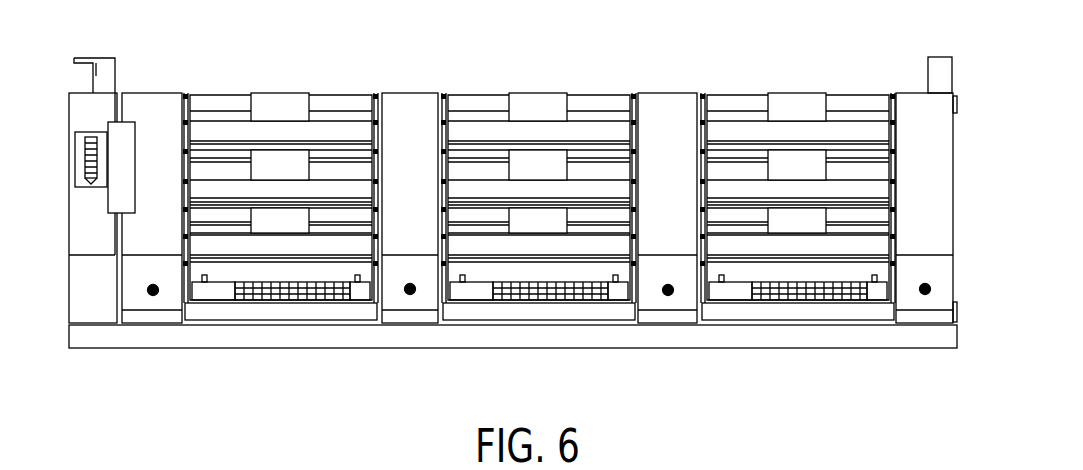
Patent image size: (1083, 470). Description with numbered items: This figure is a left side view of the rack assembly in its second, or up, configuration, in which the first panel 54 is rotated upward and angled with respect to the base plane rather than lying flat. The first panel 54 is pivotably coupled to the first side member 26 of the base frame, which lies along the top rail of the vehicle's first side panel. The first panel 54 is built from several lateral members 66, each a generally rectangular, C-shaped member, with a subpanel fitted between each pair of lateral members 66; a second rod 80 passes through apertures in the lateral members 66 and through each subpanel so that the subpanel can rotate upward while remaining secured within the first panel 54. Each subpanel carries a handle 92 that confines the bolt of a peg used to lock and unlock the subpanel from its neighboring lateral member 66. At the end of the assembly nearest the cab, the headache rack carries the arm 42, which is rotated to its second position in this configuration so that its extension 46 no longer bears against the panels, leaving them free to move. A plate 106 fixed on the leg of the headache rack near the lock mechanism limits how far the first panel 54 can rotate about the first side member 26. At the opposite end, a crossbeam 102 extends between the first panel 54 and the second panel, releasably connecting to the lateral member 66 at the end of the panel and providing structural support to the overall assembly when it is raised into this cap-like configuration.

The first side member 26 is at (672, 336).
The arm 42 is at (104, 66).
The extension 46 is at (83, 57).
The first panel 54 is at (540, 45).
The lateral member 66 is at (148, 105).
The second rod 80 is at (230, 103).
The handle 92 is at (216, 290).
The crossbeam 102 is at (939, 63).
The plate 106 is at (125, 178).